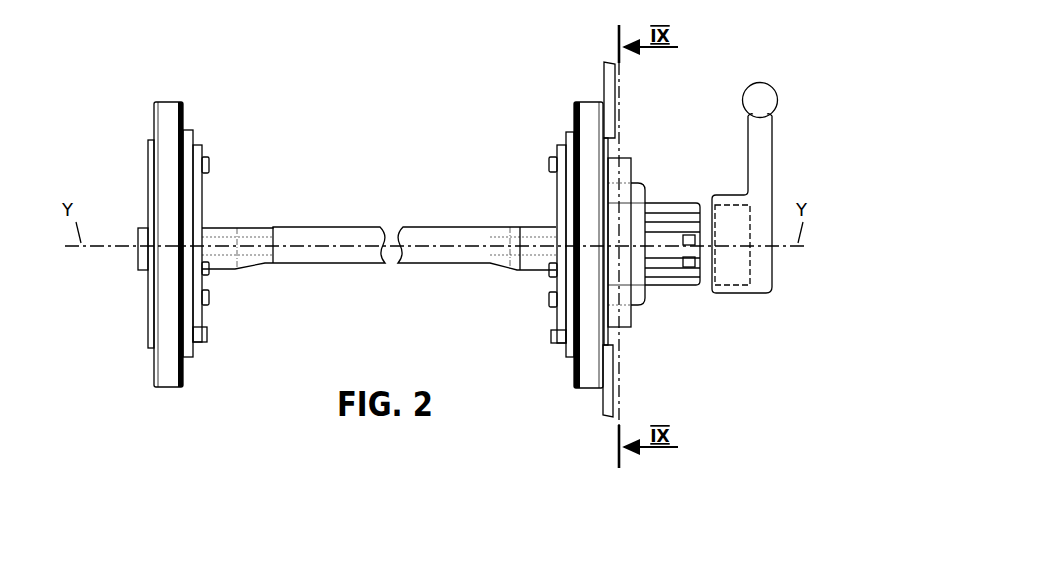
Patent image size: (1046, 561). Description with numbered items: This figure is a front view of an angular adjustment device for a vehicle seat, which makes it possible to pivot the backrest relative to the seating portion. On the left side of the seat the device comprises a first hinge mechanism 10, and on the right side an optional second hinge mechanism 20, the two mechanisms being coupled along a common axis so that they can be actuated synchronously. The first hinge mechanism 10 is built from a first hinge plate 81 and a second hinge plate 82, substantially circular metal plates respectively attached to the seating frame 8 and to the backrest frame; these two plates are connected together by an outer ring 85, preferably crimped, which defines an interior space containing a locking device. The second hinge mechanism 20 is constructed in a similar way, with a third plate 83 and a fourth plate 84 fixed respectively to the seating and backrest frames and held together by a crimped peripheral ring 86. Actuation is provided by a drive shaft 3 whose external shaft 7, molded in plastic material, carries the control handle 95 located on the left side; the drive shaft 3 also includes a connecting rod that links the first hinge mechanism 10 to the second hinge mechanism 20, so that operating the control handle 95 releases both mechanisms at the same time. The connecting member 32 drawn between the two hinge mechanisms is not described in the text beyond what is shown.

The drive shaft 3 is at (661, 294).
The external shaft 7 is at (677, 200).
The seating frame 8 is at (614, 90).
The first hinge mechanism 10 is at (567, 128).
The second hinge mechanism 20 is at (201, 128).
The shaft 32 is at (334, 266).
The first hinge plate 81 is at (644, 157).
The second hinge plate 82 is at (553, 151).
The third plate 83 is at (146, 158).
The fourth plate 84 is at (206, 151).
The outer ring 85 is at (586, 103).
The crimped peripheral ring 86 is at (166, 105).
The control handle 95 is at (761, 88).